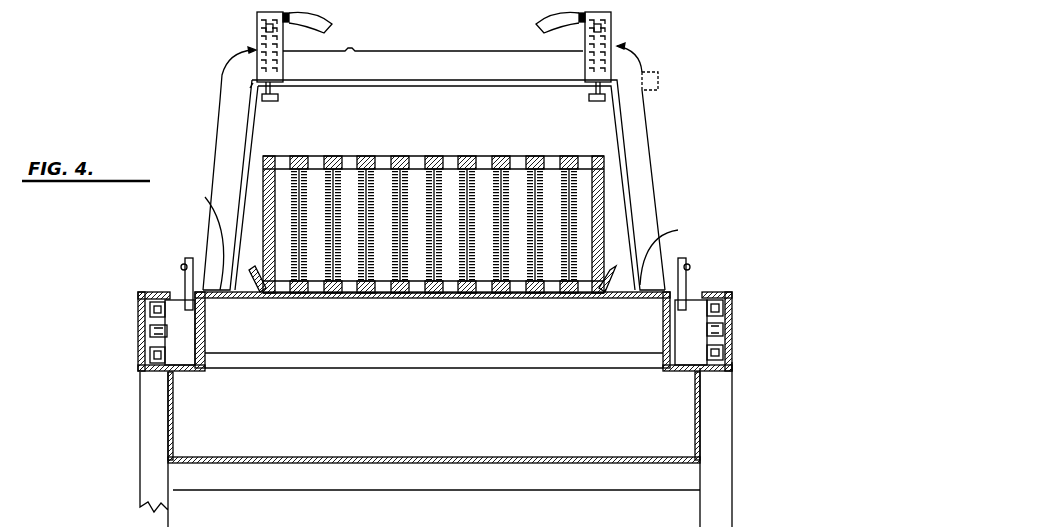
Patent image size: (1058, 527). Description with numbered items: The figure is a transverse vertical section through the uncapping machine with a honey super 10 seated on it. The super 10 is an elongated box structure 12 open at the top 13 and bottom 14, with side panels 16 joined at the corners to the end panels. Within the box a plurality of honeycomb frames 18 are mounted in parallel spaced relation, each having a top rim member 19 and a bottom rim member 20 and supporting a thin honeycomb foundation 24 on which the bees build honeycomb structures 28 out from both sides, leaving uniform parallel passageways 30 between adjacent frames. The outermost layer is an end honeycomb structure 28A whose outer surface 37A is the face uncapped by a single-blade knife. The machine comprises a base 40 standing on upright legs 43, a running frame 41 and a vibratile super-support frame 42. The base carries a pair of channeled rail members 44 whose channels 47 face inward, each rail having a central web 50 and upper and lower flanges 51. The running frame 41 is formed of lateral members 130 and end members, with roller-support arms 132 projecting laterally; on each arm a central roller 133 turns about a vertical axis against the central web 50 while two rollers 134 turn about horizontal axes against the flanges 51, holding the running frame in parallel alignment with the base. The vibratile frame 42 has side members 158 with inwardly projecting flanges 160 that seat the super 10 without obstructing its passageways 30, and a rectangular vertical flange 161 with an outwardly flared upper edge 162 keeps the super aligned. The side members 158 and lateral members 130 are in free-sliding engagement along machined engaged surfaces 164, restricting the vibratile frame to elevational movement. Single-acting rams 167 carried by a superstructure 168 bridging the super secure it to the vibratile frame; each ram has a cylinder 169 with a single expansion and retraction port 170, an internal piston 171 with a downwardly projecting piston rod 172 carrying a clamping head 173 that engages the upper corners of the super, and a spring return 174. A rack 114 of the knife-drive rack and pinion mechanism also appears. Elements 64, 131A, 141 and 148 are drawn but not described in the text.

The super 10 is at (247, 143).
The box structure 12 is at (262, 157).
The top 13 is at (510, 155).
The bottom 14 is at (350, 288).
The side panels 16 is at (270, 170).
The honeycomb frames 18 is at (372, 156).
The top rim member 19 is at (436, 155).
The bottom rim member 20 is at (435, 290).
The honeycomb foundation 24 is at (297, 170).
The honeycomb structures 28 is at (346, 180).
The end honeycomb structure 28A is at (290, 190).
The passageways 30 is at (527, 297).
The outer surface 37A is at (283, 283).
The base 40 is at (735, 437).
The running frame 41 is at (668, 372).
The vibratile super-support frame 42 is at (213, 337).
The legs 43 is at (140, 490).
The rail members 44 is at (140, 366).
The channel 47 is at (150, 360).
The central web 50 is at (150, 330).
The upper and lower flanges 51 is at (160, 302).
The bottom tray 64 is at (505, 457).
The rack 114 is at (660, 78).
The lateral members 130 is at (203, 368).
The tray bottom 131A is at (412, 368).
The roller-support arms 132 is at (178, 296).
The central roller 133 is at (142, 337).
The rollers 134 is at (148, 300).
The retaining bar 141 is at (188, 258).
The hole 148 is at (180, 262).
The side members 158 is at (442, 237).
The flanges 160 is at (252, 303).
The vertical flange 161 is at (253, 283).
The upper edge 162 is at (262, 250).
The engaged surfaces 164 is at (663, 333).
The single-acting rams 167 is at (256, 50).
The superstructure 168 is at (415, 52).
The cylinder 169 is at (258, 44).
The expansion and retraction port 170 is at (434, 21).
The piston 171 is at (283, 17).
The piston rod 172 is at (250, 88).
The clamping head 173 is at (278, 97).
The spring return 174 is at (283, 43).